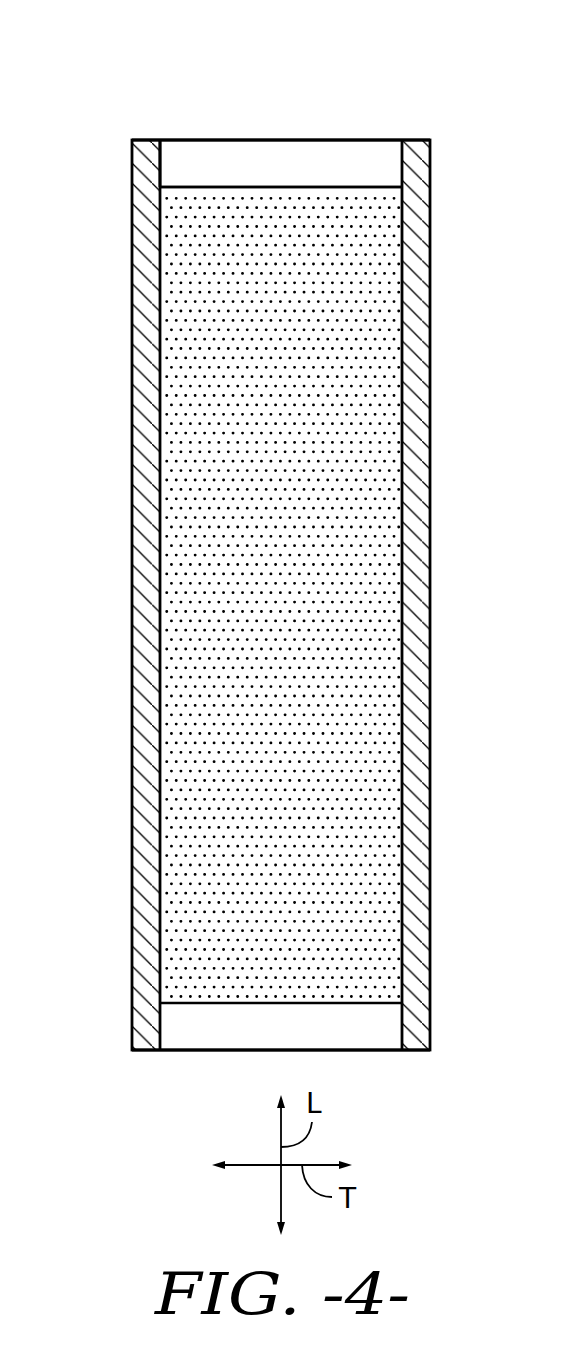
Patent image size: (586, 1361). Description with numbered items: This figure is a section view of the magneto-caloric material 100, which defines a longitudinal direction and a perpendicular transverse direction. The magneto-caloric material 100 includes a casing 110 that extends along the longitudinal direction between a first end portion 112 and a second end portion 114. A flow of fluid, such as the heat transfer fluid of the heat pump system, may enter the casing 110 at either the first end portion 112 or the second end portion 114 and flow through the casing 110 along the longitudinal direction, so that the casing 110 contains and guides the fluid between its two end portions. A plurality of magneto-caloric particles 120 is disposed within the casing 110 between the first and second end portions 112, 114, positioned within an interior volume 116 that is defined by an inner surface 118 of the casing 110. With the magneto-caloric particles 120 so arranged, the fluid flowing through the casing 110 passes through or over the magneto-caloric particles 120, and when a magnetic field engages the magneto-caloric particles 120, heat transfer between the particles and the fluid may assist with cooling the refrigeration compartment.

The magneto-caloric material 100 is at (112, 89).
The casing 110 is at (418, 392).
The first end portion 112 is at (442, 165).
The second end portion 114 is at (442, 1020).
The interior volume 116 is at (304, 167).
The inner surface 118 is at (160, 167).
The magneto-caloric particles 120 is at (363, 648).